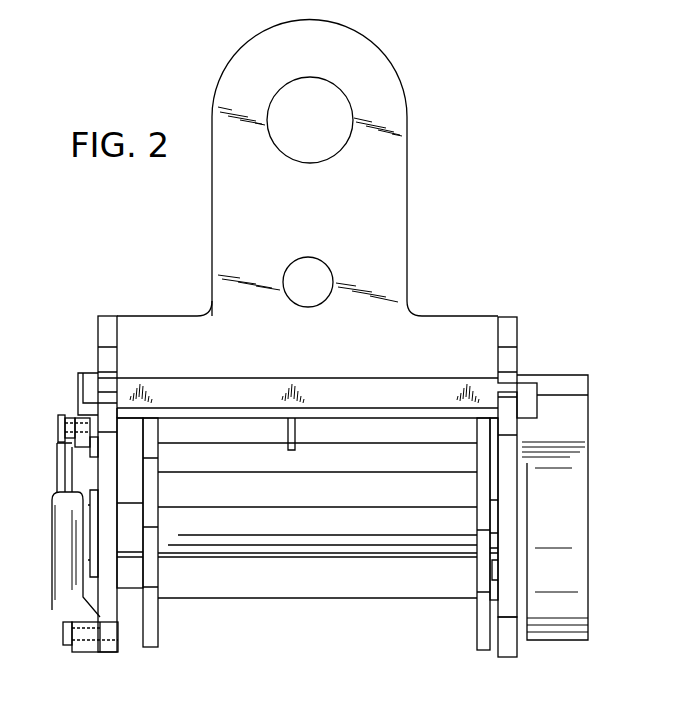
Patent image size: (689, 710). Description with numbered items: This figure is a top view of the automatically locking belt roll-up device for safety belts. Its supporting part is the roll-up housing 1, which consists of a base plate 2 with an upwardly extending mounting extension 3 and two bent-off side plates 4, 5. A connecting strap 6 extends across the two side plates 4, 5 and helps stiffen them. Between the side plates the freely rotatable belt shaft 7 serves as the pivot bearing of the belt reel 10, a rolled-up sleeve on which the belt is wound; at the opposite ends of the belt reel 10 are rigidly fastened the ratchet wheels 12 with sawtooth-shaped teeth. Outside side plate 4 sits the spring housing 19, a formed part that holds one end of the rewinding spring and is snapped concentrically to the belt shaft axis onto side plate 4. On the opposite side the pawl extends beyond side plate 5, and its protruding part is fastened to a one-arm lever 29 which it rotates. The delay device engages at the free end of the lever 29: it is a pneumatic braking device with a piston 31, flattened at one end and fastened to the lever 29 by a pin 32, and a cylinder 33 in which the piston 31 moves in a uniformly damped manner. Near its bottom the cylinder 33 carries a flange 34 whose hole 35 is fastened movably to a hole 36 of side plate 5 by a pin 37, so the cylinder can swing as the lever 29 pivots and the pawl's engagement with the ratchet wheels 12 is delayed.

The roll-up housing 1 is at (452, 307).
The base plate 2 is at (150, 326).
The mounting extension 3 is at (407, 184).
The side plate 4 is at (509, 338).
The side plate 5 is at (105, 334).
The connecting strap 6 is at (374, 396).
The belt shaft 7 is at (280, 545).
The belt reel 10 is at (370, 584).
The ratchet wheels 12 is at (163, 642).
The spring housing 19 is at (578, 508).
The one-arm lever 29 is at (80, 398).
The piston 31 is at (58, 470).
The pin 32 is at (58, 426).
The cylinder 33 is at (62, 545).
The flange 34 is at (82, 652).
The hole 35 is at (84, 628).
The hole 36 is at (106, 648).
The pin 37 is at (63, 635).